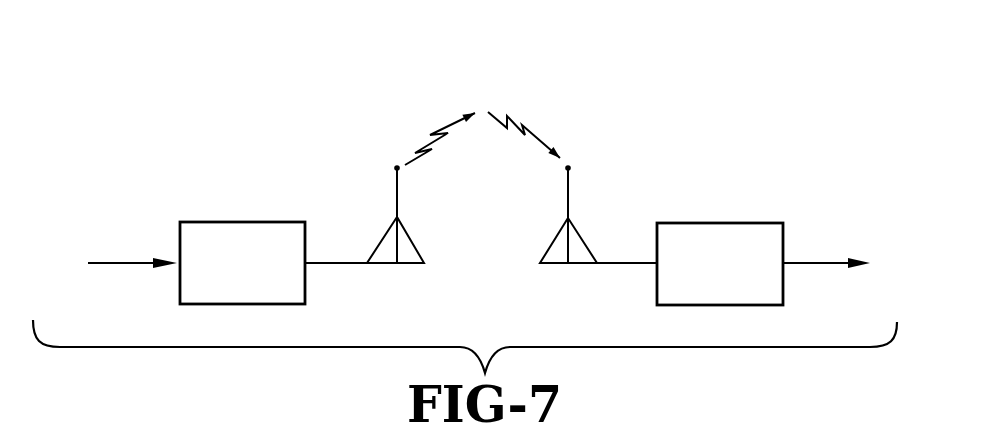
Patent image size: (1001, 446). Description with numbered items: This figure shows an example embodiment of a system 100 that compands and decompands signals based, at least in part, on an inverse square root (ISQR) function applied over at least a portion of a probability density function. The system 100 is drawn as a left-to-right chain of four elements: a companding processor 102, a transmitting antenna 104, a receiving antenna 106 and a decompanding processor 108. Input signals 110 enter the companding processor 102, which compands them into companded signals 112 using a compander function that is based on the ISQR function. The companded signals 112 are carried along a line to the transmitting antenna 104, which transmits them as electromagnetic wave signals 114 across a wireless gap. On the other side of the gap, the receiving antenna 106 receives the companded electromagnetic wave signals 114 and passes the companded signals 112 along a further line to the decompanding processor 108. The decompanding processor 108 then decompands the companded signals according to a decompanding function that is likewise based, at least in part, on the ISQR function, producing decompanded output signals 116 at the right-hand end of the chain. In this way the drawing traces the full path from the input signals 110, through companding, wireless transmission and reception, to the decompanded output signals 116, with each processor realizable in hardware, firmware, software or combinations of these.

The system 100 is at (652, 78).
The companding processor 102 is at (240, 222).
The transmitting antenna 104 is at (396, 188).
The receiving antenna 106 is at (569, 188).
The decompanding processor 108 is at (731, 223).
The input signals 110 is at (121, 262).
The companded signals 112 is at (337, 264).
The electromagnetic wave signals 114 is at (446, 124).
The decompanded output signals 116 is at (812, 262).